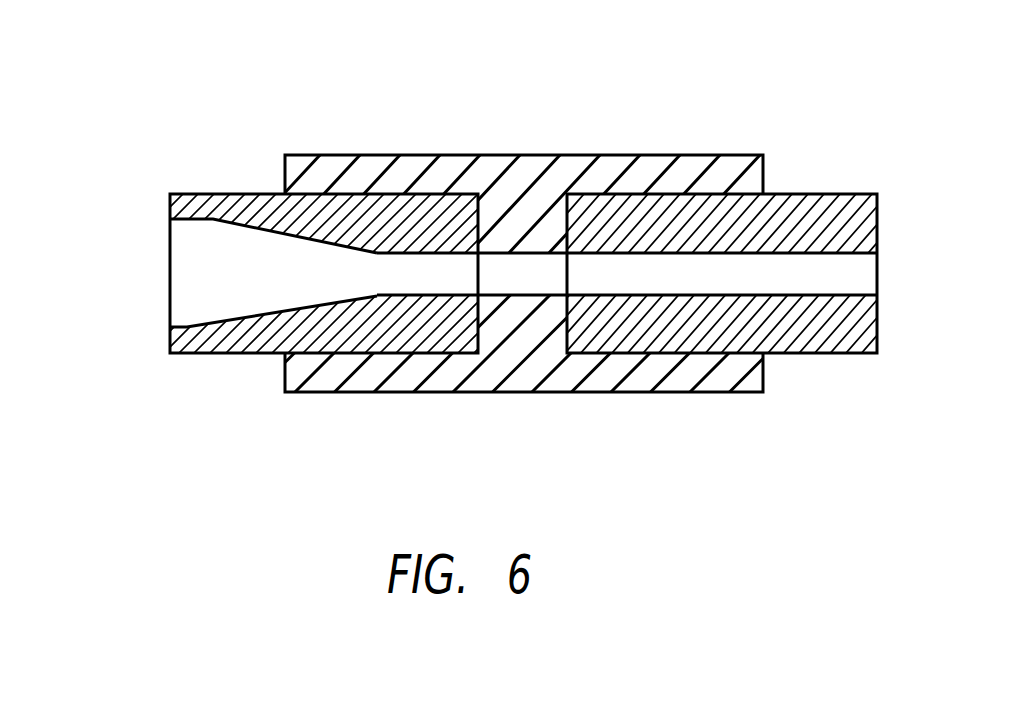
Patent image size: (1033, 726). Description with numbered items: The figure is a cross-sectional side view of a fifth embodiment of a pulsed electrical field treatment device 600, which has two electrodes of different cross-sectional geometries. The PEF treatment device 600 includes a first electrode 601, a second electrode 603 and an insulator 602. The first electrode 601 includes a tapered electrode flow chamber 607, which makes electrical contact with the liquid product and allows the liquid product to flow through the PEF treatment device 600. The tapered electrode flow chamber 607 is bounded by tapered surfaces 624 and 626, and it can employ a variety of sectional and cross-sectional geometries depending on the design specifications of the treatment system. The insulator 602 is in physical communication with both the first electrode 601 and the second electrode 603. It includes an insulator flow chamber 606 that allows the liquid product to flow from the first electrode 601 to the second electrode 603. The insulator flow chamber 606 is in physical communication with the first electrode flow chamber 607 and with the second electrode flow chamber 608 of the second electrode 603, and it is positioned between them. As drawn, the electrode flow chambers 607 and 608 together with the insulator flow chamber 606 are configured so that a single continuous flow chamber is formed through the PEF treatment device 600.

The pulsed electrical field treatment device 600 is at (472, 249).
The first electrode 601 is at (250, 207).
The insulator 602 is at (530, 175).
The second electrode 603 is at (825, 208).
The insulator flow chamber 606 is at (527, 280).
The tapered electrode flow chamber 607 is at (317, 278).
The second electrode flow chamber 608 is at (738, 278).
The tapered surface 624 is at (280, 234).
The tapered surface 626 is at (280, 312).